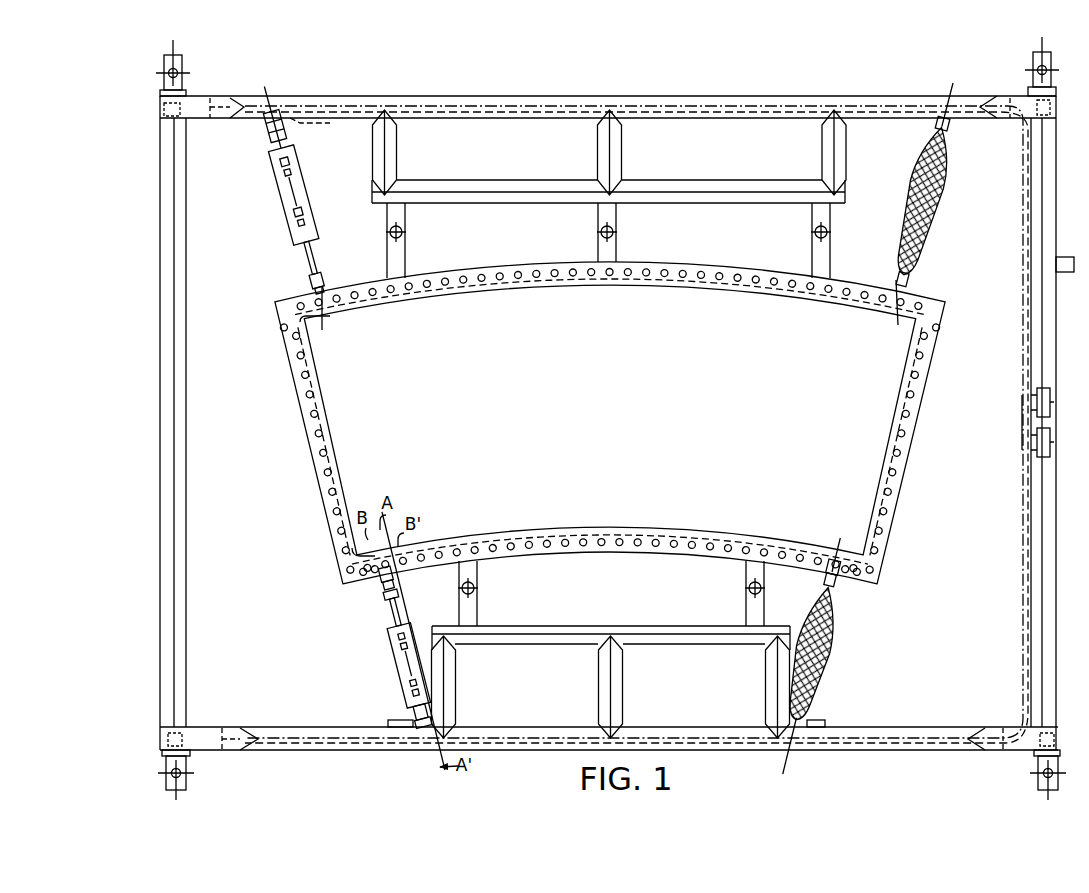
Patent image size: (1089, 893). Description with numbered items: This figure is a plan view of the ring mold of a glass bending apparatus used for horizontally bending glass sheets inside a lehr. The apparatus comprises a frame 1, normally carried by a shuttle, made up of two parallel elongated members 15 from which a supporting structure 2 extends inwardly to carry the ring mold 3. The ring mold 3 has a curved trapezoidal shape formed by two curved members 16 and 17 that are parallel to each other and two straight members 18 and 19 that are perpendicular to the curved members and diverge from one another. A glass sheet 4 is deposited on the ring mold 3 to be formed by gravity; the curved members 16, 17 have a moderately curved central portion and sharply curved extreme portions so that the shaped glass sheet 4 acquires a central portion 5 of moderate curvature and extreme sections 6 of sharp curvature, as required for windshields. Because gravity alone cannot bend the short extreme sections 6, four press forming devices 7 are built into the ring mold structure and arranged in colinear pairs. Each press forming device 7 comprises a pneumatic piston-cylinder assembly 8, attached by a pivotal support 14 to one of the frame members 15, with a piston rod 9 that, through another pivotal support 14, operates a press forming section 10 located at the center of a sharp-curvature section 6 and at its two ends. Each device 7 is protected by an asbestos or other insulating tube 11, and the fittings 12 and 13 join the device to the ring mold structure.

The frame 1 is at (158, 498).
The supporting structure 2 is at (556, 206).
The ring mold 3 is at (304, 452).
The glass sheet 4 is at (336, 522).
The central portion 5 is at (599, 376).
The extreme sections 6 is at (332, 434).
The press forming devices 7 is at (606, 430).
The pneumatic piston-cylinder assembly 8 is at (298, 190).
The piston rod 9 is at (309, 252).
The press forming section 10 is at (339, 320).
The insulating tube 11 is at (838, 611).
The hinge fitting 12 is at (328, 284).
The hinge fitting 13 is at (377, 586).
The pivotal support 14 is at (416, 720).
The elongated members 15 is at (829, 98).
The curved member 16 is at (540, 274).
The curved member 17 is at (599, 538).
The straight member 18 is at (380, 460).
The straight member 19 is at (901, 468).